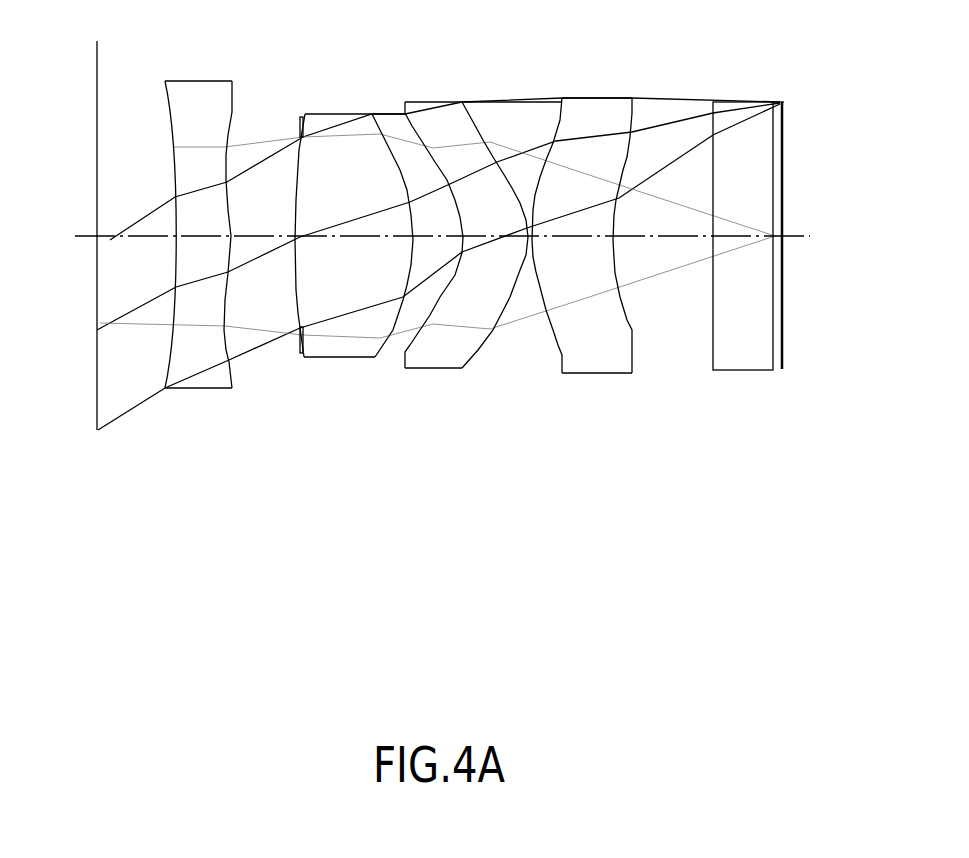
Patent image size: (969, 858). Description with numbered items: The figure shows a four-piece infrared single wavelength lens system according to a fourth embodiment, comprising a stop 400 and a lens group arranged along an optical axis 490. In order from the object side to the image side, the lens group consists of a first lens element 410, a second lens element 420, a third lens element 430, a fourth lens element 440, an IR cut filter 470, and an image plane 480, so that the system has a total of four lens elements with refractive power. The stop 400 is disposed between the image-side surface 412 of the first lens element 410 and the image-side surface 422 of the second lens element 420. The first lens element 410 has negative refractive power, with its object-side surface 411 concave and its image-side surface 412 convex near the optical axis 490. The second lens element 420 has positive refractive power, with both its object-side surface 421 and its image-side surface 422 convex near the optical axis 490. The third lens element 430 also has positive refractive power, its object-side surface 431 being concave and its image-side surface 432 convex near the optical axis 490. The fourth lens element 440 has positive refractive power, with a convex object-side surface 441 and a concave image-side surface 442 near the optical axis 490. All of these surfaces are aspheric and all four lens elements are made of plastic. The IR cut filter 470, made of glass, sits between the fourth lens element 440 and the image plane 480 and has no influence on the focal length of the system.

The stop 400 is at (299, 134).
The first lens element 410 is at (200, 250).
The object-side surface of first lens element 411 is at (165, 358).
The image-side surface of first lens element 412 is at (230, 357).
The second lens element 420 is at (345, 250).
The object-side surface of second lens element 421 is at (301, 317).
The image-side surface of second lens element 422 is at (395, 333).
The third lens element 430 is at (481, 250).
The object-side surface of third lens element 431 is at (404, 362).
The image-side surface of third lens element 432 is at (485, 337).
The fourth lens element 440 is at (607, 245).
The object-side surface of fourth lens element 441 is at (553, 337).
The image-side surface of fourth lens element 442 is at (632, 330).
The IR cut filter 470 is at (753, 99).
The image plane 480 is at (783, 302).
The optical axis 490 is at (83, 235).